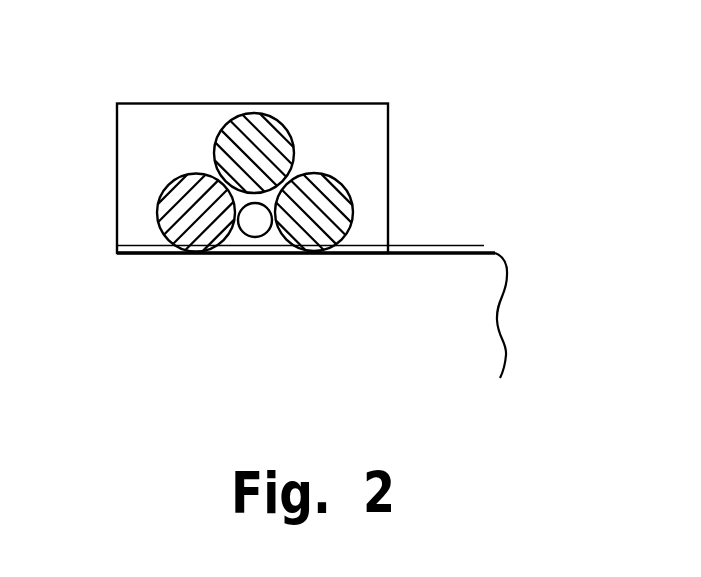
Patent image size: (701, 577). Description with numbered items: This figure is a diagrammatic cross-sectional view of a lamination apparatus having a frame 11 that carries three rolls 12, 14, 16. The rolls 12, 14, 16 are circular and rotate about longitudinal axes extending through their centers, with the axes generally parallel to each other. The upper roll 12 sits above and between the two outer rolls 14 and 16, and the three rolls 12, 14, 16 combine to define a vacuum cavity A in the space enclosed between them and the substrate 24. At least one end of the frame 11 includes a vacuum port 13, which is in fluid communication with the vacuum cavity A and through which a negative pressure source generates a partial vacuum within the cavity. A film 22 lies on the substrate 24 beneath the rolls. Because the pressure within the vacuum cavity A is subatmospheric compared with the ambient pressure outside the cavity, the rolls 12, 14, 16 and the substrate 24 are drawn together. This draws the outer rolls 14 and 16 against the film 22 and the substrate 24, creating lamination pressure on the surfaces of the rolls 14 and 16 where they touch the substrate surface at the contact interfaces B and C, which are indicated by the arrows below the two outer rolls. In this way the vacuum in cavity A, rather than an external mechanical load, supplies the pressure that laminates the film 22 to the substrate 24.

The frame 11 is at (142, 148).
The roll 12 is at (253, 140).
The vacuum port 13 is at (252, 224).
The roll 14 is at (323, 202).
The roll 16 is at (182, 230).
The film 22 is at (440, 246).
The substrate 24 is at (473, 313).
The vacuum cavity A is at (250, 196).
The contact interface B is at (197, 278).
The contact interface C is at (313, 278).